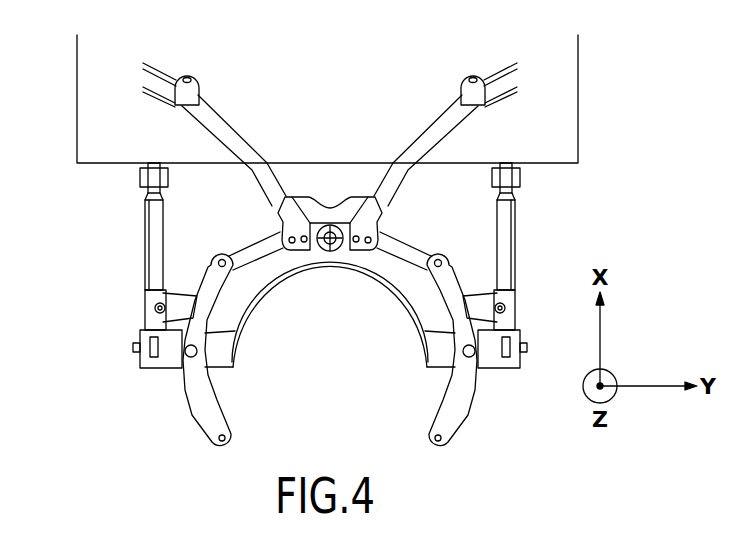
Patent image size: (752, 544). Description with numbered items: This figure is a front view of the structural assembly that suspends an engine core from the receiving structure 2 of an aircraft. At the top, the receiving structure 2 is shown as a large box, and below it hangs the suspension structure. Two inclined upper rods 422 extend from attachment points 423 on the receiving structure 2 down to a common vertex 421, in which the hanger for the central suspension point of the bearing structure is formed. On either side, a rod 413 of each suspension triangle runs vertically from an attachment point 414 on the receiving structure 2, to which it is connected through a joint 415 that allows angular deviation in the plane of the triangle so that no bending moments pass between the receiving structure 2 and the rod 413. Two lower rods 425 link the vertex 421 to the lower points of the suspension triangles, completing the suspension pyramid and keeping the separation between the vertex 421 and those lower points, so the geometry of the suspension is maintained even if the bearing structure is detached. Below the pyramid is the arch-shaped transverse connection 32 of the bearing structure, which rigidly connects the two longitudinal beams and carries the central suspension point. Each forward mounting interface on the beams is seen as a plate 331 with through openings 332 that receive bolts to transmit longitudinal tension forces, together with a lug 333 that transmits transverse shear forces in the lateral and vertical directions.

The receiving structure 2 is at (88, 92).
The transverse connection 32 is at (257, 293).
The plate 331 is at (330, 349).
The through openings 332 is at (227, 436).
The lug 333 is at (198, 351).
The rods 413 is at (150, 256).
The attachment point 414 is at (330, 265).
The joint 415 is at (168, 178).
The vertex 421 is at (328, 205).
The upper rods 422 is at (238, 128).
The attachment points 423 is at (190, 75).
The lower rods 425 is at (243, 255).